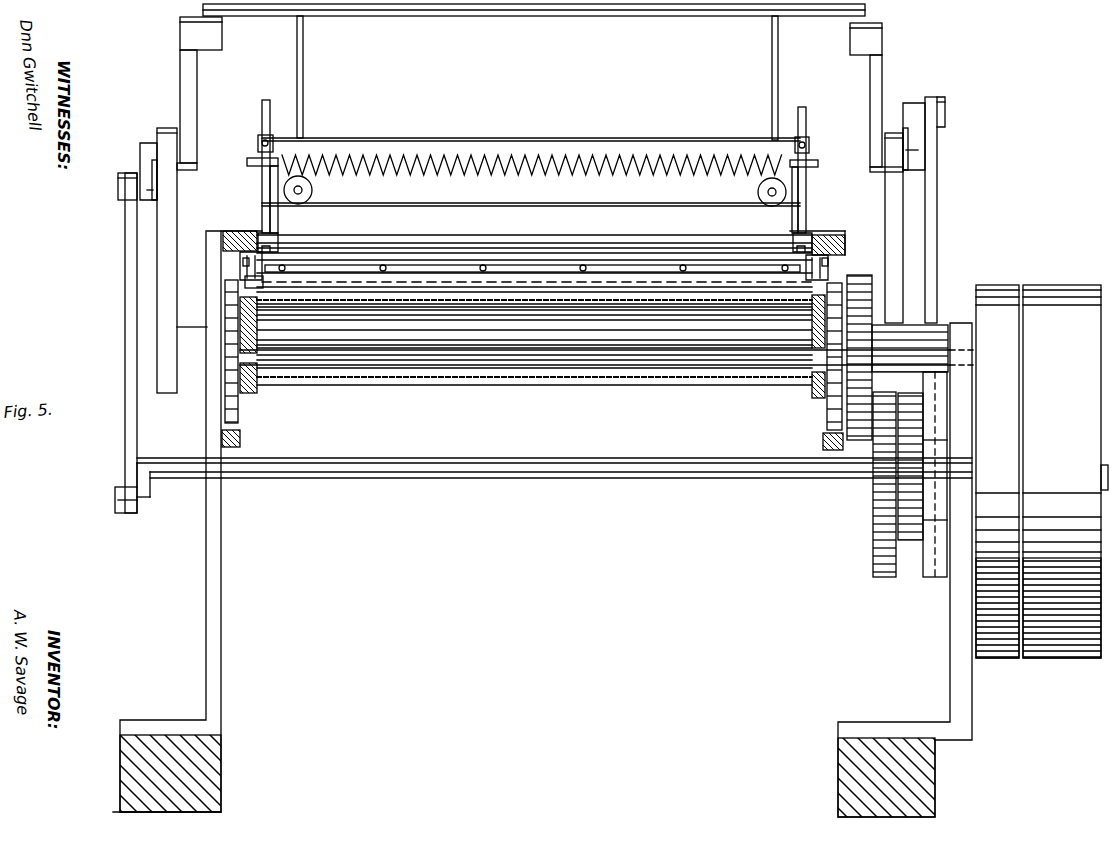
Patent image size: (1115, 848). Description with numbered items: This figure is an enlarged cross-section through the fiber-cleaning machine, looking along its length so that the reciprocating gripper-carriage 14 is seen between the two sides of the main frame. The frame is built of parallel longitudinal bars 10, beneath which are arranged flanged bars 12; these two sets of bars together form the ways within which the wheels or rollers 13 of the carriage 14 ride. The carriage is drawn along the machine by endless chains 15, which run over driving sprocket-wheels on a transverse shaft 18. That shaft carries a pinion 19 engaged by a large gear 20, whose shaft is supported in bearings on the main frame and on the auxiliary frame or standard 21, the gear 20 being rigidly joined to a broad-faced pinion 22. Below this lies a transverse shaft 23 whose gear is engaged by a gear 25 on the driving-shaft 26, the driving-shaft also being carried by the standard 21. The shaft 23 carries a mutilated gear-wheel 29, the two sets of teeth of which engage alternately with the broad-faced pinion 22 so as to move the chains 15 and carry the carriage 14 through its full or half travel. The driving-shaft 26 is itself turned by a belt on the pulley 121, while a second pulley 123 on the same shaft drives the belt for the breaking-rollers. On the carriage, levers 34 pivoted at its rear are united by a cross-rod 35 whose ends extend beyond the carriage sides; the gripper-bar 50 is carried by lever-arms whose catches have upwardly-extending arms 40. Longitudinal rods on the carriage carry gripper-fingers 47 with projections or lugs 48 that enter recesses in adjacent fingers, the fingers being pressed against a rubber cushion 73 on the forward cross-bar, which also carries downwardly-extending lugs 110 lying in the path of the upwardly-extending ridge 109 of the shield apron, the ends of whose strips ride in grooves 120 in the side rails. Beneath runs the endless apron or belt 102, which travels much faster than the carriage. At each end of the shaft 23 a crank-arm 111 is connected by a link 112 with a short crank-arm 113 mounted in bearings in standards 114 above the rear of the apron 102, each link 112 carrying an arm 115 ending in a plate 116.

The longitudinal bars 10 is at (237, 231).
The flanged bars 12 is at (238, 300).
The wheels or rollers 13 is at (243, 260).
The reciprocating gripper-carriage 14 is at (554, 172).
The endless chains 15 is at (238, 412).
The transverse shaft 18 is at (758, 348).
The pinion 19 is at (866, 330).
The large gear 20 is at (859, 347).
The auxiliary frame or standard 21 is at (542, 524).
The broad-faced pinion 22 is at (607, 337).
The transverse shaft 23 is at (554, 458).
The gear 25 is at (908, 542).
The driving-shaft 26 is at (1107, 490).
The mutilated gear-wheel 29 is at (873, 517).
The levers 34 is at (772, 88).
The cross-rod 35 is at (534, 22).
The upwardly-extending arms 40 is at (533, 158).
The gripper-fingers 47 is at (533, 266).
The projections or lugs 48 is at (408, 292).
The toothed gripper-bar 50 is at (532, 158).
The rubber cushion 73 is at (622, 265).
The endless apron or belt 102 is at (455, 310).
The upwardly-extending ridge 109 is at (360, 287).
The downwardly-extending lugs 110 is at (537, 290).
The crank-arm 111 is at (146, 488).
The link 112 is at (125, 315).
The short crank-arm 113 is at (142, 153).
The standards 114 is at (177, 195).
The arm 115 is at (190, 95).
The plate 116 is at (531, 36).
The grooves 120 is at (258, 288).
The pulley 121 is at (1062, 471).
The pulley 123 is at (997, 471).